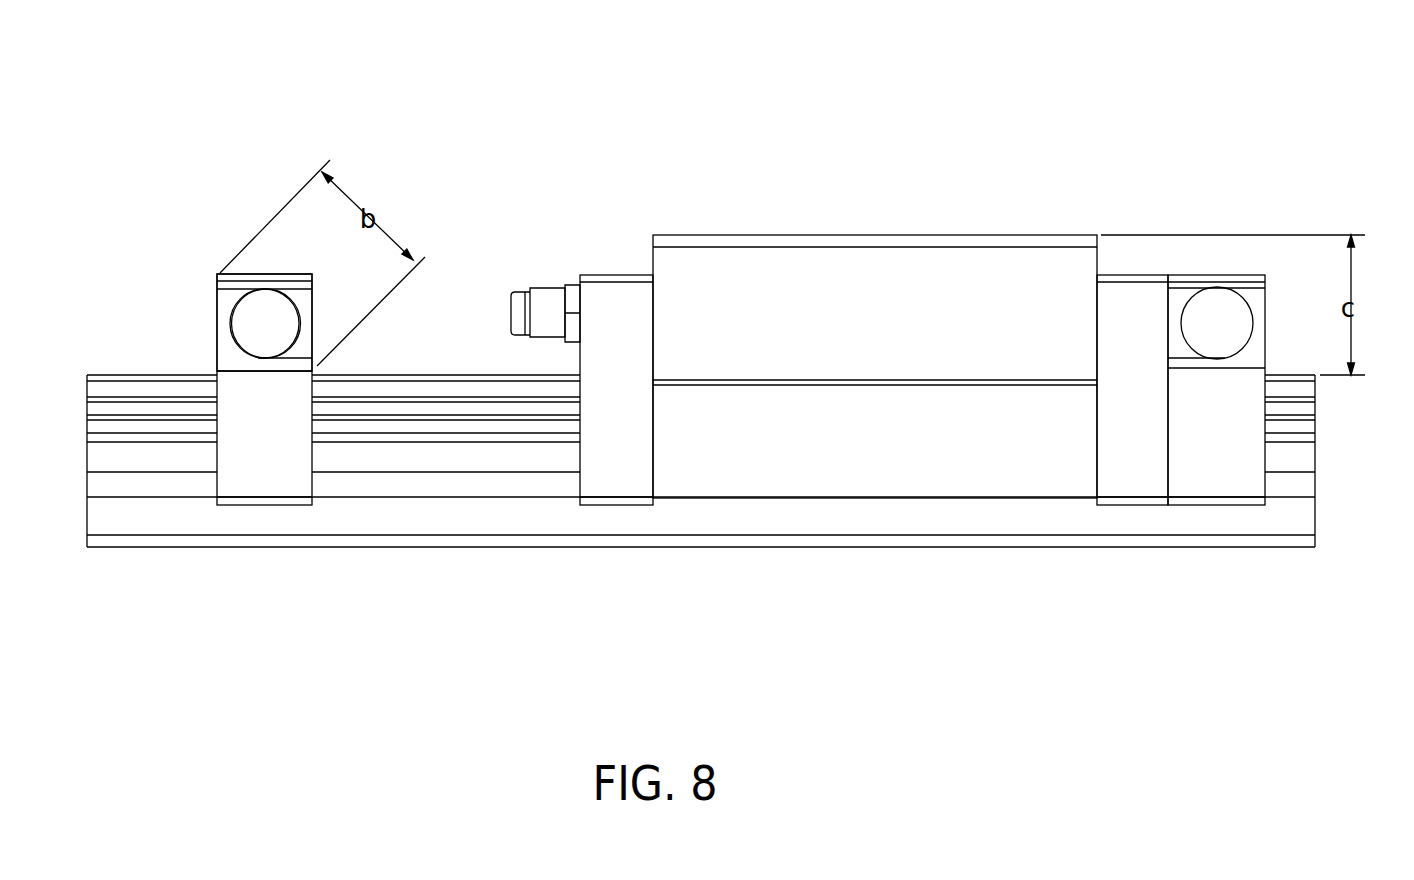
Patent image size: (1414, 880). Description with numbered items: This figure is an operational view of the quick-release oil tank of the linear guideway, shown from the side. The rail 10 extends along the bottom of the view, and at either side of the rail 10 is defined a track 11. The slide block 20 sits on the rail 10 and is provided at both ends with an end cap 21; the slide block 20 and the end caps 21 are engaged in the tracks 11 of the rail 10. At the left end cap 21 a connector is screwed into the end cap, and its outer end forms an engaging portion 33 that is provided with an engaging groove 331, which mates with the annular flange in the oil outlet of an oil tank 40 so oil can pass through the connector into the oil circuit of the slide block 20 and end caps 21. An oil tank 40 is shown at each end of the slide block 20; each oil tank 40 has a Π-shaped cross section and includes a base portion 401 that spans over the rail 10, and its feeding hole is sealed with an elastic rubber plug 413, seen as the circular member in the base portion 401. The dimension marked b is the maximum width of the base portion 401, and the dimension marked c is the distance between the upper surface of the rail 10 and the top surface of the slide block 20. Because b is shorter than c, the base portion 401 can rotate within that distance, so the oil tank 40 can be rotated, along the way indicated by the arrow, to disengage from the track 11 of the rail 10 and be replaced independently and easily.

The rail 10 is at (1288, 375).
The track 11 is at (1317, 518).
The slide block 20 is at (843, 233).
The end cap 21 is at (612, 465).
The engaging portion 33 is at (550, 298).
The engaging groove 331 is at (528, 290).
The oil tank 40 is at (240, 185).
The base portion 401 is at (217, 315).
The elastic rubber plug 413 is at (263, 330).